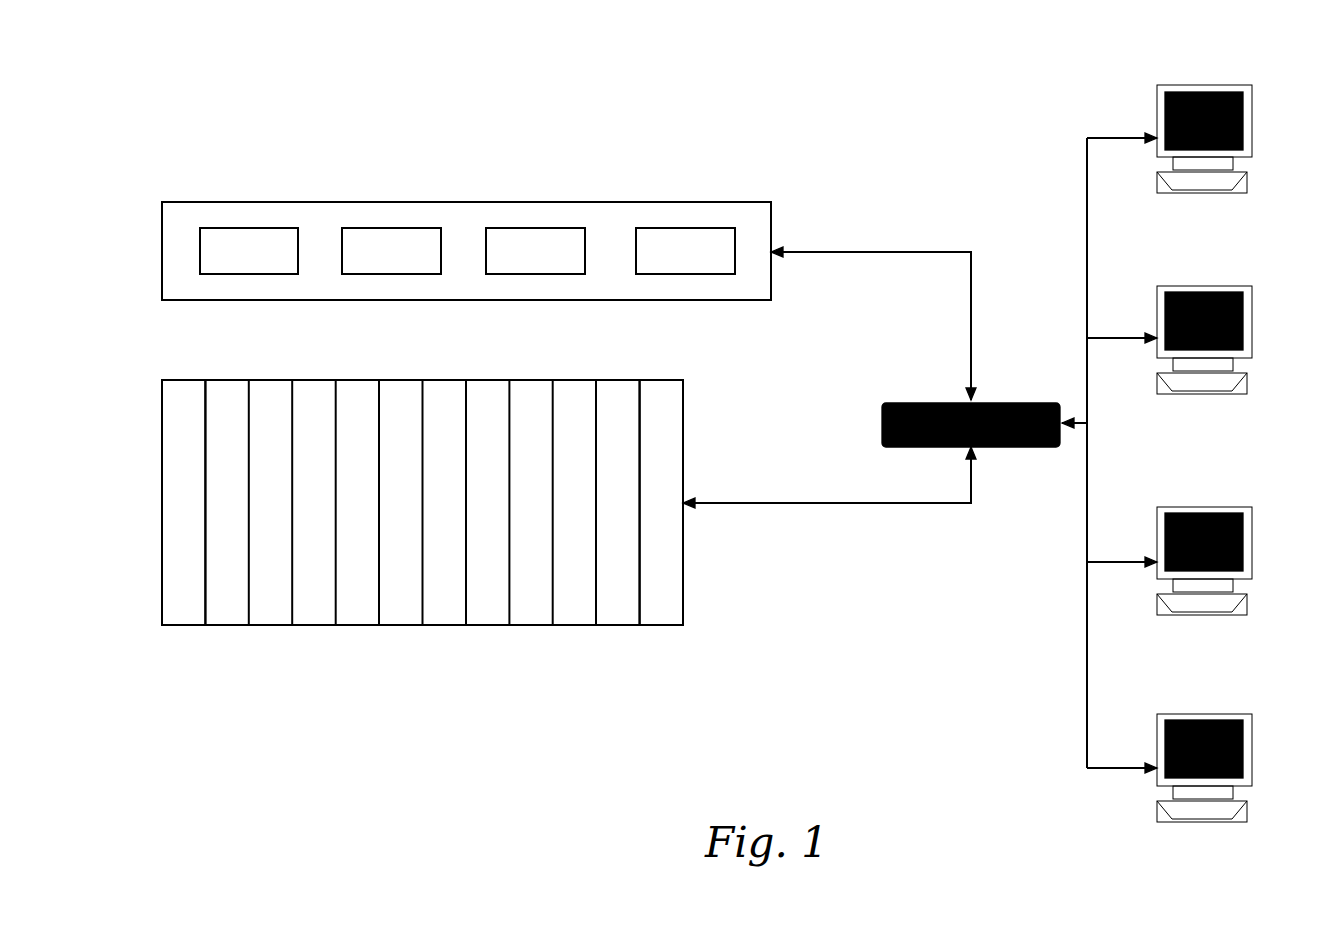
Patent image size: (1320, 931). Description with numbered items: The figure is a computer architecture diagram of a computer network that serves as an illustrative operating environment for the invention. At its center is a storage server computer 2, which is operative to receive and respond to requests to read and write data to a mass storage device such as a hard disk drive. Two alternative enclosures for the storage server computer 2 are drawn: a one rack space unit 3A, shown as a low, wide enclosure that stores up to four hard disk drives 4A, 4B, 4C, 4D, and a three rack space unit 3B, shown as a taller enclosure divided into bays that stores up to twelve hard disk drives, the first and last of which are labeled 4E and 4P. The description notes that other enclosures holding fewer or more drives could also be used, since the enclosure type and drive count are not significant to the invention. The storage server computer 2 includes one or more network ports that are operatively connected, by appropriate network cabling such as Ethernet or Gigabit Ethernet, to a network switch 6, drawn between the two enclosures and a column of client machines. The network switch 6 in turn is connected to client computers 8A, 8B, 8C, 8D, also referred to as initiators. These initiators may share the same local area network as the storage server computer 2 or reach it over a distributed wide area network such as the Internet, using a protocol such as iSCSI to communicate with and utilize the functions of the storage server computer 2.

The storage server computer 2 is at (630, 167).
The one rack space unit 3A is at (433, 210).
The three rack space unit 3B is at (398, 627).
The hard disk drive 4A is at (222, 233).
The hard disk drive 4B is at (357, 233).
The hard disk drive 4C is at (522, 233).
The hard disk drive 4D is at (678, 240).
The hard disk drive 4E is at (185, 616).
The hard disk drive 4P is at (666, 618).
The network switch 6 is at (1048, 446).
The client computer 8A is at (1213, 97).
The client computer 8B is at (1210, 292).
The client computer 8C is at (1203, 517).
The client computer 8D is at (1195, 722).